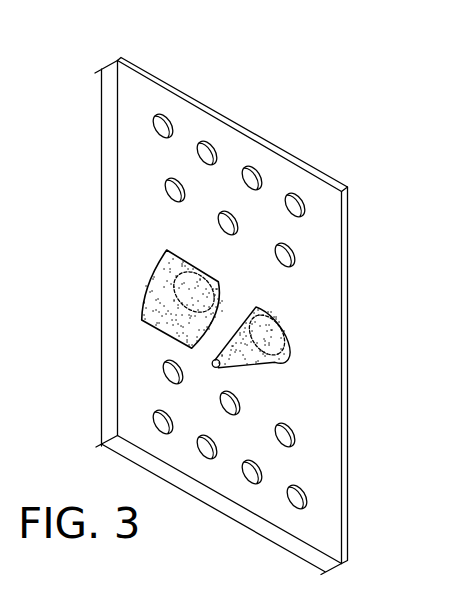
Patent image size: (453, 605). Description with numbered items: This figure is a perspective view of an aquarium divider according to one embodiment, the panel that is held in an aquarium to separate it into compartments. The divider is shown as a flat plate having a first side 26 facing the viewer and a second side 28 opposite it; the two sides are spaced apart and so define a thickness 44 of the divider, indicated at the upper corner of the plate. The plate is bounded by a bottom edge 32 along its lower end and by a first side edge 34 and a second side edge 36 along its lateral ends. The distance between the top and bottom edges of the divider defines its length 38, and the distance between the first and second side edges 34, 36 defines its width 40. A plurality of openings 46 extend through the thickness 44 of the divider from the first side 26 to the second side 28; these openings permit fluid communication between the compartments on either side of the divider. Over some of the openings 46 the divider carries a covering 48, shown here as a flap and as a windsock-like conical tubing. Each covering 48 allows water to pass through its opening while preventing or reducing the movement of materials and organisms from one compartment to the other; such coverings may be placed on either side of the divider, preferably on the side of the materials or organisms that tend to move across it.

The first side 26 is at (313, 278).
The second side 28 is at (318, 170).
The bottom edge 32 is at (195, 483).
The first side edge 34 is at (118, 228).
The second side edge 36 is at (343, 277).
The length 38 is at (102, 297).
The width 40 is at (242, 528).
The thickness 44 is at (110, 56).
The openings 46 is at (230, 212).
The covering 48 is at (158, 295).